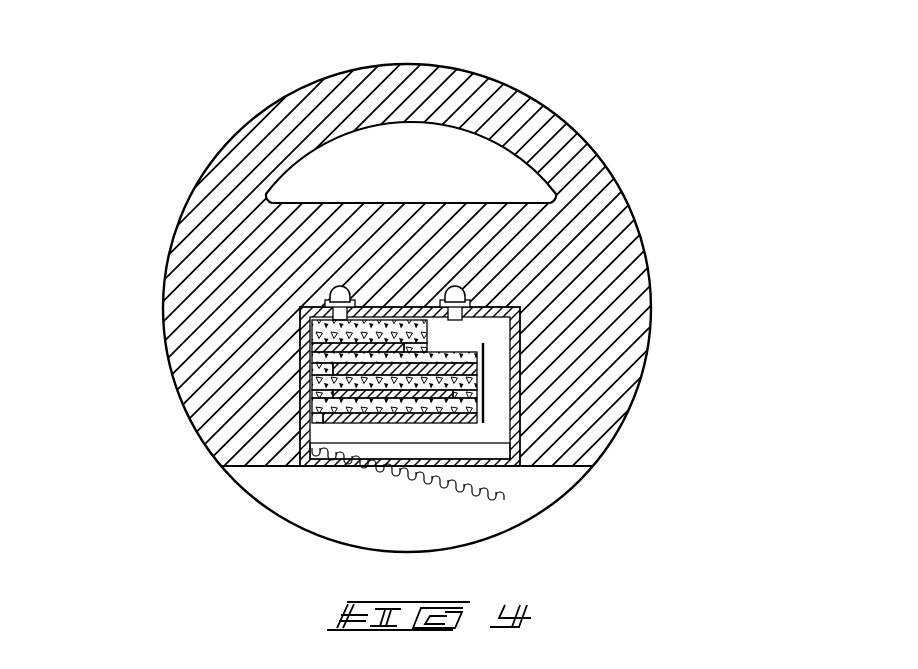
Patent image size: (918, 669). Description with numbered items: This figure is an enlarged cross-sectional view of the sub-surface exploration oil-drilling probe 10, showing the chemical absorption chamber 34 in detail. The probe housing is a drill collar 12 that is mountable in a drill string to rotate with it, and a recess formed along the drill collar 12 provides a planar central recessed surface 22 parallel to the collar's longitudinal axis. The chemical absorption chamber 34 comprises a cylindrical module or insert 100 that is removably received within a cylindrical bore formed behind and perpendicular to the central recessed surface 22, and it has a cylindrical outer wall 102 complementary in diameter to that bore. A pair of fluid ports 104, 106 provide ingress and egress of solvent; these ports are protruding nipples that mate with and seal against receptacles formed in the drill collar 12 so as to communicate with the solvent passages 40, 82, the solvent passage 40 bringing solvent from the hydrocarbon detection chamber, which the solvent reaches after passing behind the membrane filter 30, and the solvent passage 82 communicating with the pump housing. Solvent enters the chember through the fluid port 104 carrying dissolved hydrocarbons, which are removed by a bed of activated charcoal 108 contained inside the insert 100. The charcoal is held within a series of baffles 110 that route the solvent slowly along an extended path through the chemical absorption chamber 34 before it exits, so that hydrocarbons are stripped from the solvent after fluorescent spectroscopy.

The oil-drilling probe 10 is at (459, 292).
The drill collar 12 is at (602, 458).
The central recessed surface 22 is at (527, 468).
The membrane filter 30 is at (348, 460).
The chemical absorption chamber 34 is at (300, 322).
The solvent passage 40 is at (221, 236).
The solvent passage 82 is at (595, 237).
The cylindrical module or insert 100 is at (420, 368).
The cylindrical outer wall 102 is at (223, 465).
The fluid port 104 is at (330, 292).
The fluid port 106 is at (465, 290).
The bed of activated charcoal 108 is at (298, 372).
The baffles 110 is at (300, 402).